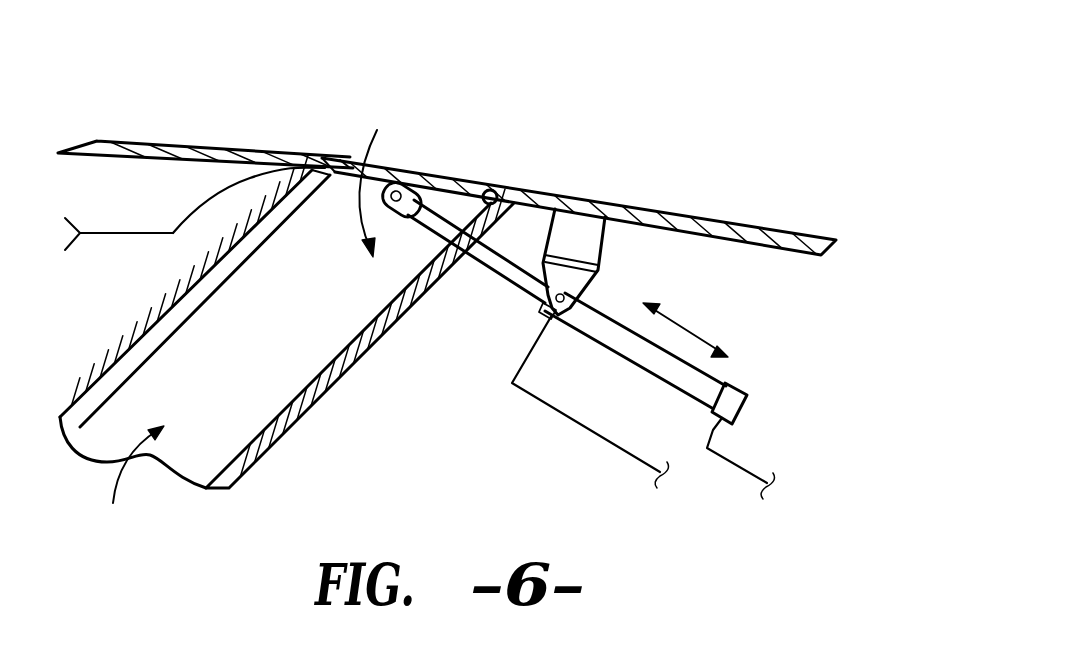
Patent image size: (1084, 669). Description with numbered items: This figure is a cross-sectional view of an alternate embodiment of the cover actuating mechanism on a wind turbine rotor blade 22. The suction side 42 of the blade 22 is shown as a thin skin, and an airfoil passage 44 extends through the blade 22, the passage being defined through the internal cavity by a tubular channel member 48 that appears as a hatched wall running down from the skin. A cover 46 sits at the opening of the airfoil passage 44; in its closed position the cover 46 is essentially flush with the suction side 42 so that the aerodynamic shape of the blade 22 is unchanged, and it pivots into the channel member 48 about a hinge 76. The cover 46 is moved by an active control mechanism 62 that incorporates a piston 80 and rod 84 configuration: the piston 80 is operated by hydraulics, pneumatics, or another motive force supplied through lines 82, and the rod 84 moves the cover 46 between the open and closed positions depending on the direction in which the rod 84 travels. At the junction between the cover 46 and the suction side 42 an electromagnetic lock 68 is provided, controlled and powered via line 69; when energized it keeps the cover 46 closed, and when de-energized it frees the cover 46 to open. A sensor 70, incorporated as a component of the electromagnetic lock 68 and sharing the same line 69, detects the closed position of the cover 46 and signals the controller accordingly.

The wind turbine rotor blade 22 is at (618, 104).
The suction side 42 is at (193, 142).
The airfoil passage 44 is at (195, 348).
The cover 46 is at (420, 170).
The channel member 48 is at (343, 368).
The active control mechanism 62 is at (608, 248).
The electromagnetic lock 68 is at (318, 157).
The line 69 is at (147, 235).
The sensor 70 is at (334, 172).
The hinge 76 is at (488, 189).
The piston 80 is at (612, 347).
The lines 82 is at (558, 412).
The rod 84 is at (488, 265).